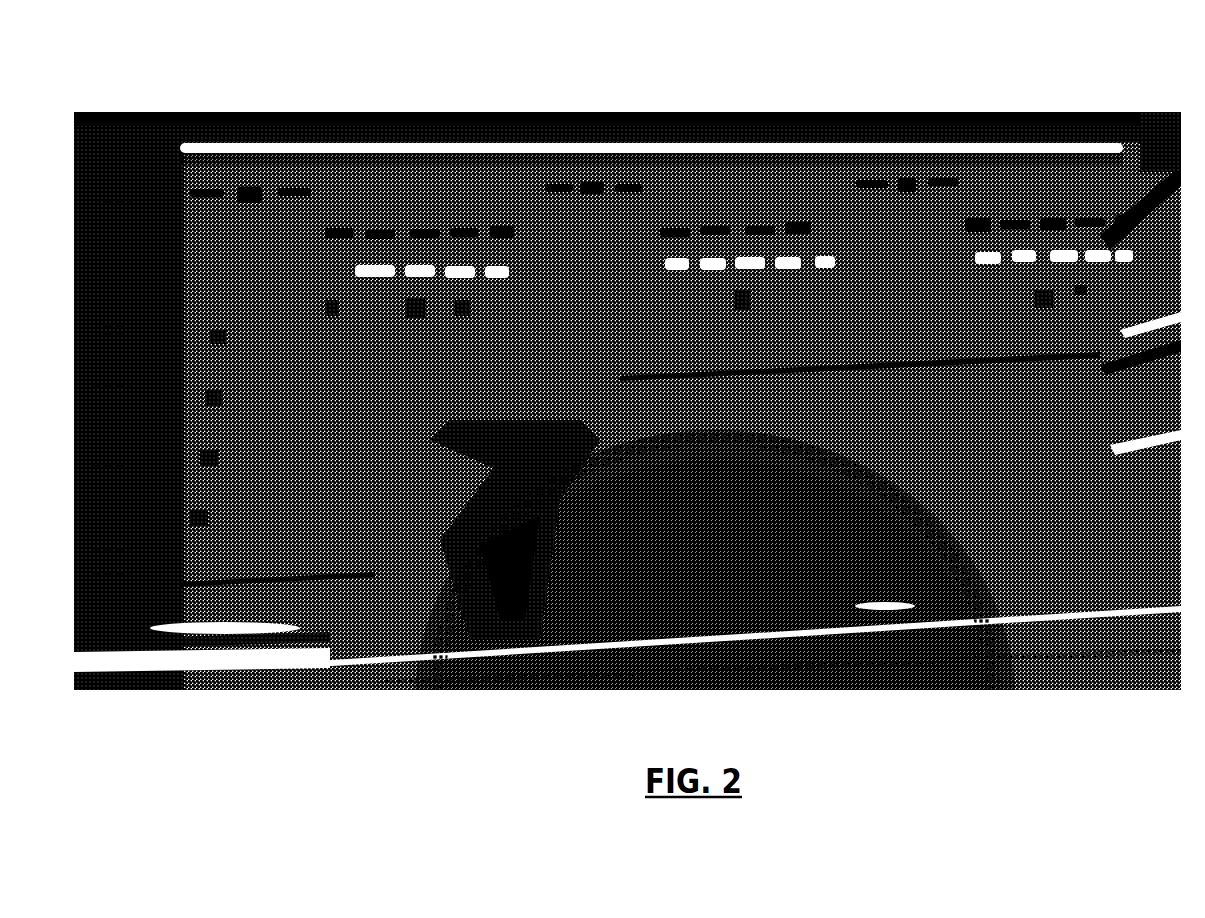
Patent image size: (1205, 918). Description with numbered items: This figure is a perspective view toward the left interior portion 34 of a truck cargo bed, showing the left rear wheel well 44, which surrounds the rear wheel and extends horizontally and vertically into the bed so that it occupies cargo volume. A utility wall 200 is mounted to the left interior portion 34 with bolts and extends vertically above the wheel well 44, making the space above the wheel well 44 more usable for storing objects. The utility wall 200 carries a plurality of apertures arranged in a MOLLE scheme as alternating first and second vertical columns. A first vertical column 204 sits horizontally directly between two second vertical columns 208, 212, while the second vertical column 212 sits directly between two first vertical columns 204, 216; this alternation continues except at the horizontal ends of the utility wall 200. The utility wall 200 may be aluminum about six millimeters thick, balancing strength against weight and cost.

The left interior portion 34 is at (1153, 137).
The wheel well 44 is at (713, 435).
The utility wall 200 is at (800, 163).
The first vertical column 204 is at (295, 180).
The second vertical column 208 is at (250, 180).
The second vertical column 212 is at (339, 178).
The first vertical column 216 is at (381, 174).